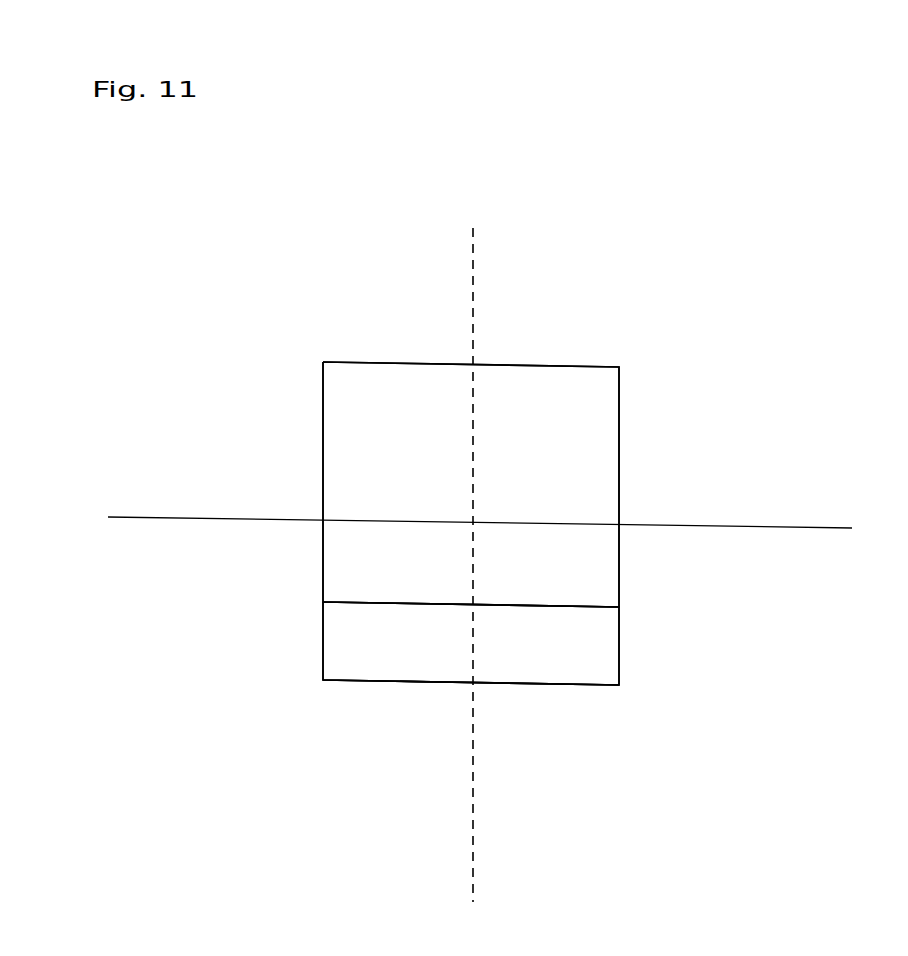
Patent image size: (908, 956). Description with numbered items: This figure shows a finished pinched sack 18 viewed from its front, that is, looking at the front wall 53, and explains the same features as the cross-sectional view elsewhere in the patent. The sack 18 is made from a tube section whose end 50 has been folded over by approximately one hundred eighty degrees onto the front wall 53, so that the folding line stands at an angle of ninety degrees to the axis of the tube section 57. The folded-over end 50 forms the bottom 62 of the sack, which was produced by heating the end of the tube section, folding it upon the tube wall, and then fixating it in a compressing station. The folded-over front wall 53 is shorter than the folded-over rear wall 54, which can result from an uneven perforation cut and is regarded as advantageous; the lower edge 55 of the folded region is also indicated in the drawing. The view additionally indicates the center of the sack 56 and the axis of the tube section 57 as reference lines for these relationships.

The sack 18 is at (660, 330).
The end of the tube section 50 is at (572, 607).
The front wall 53 is at (348, 414).
The rear wall 54 is at (348, 663).
The bottom edge 55 is at (558, 690).
The center of the sack 56 is at (495, 527).
The axis of the tube section 57 is at (469, 551).
The bottom 62 is at (414, 709).